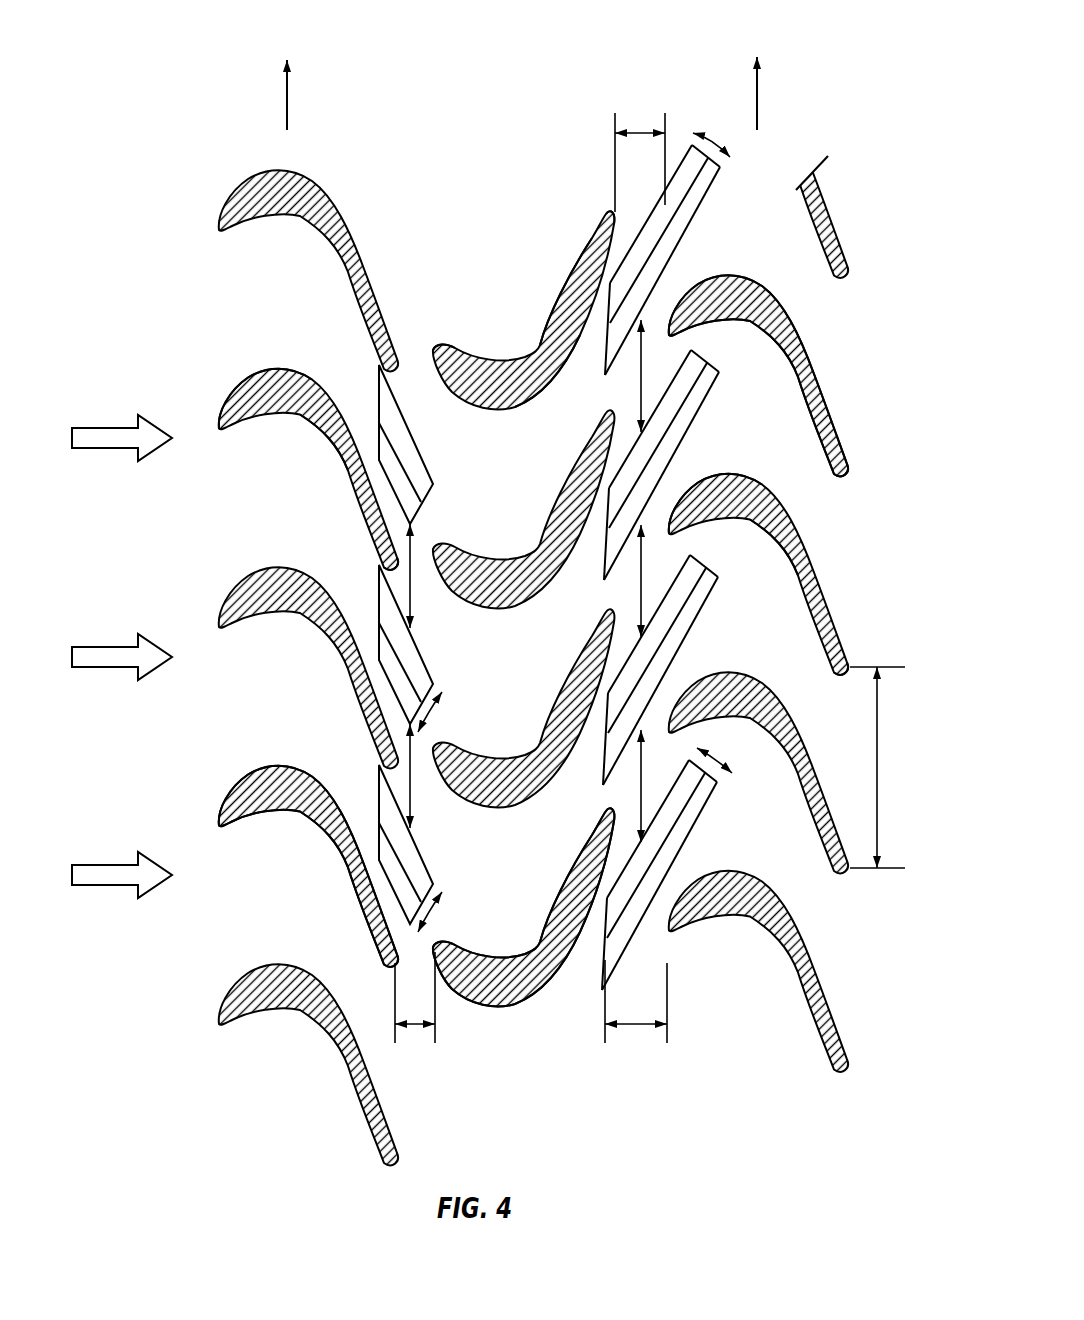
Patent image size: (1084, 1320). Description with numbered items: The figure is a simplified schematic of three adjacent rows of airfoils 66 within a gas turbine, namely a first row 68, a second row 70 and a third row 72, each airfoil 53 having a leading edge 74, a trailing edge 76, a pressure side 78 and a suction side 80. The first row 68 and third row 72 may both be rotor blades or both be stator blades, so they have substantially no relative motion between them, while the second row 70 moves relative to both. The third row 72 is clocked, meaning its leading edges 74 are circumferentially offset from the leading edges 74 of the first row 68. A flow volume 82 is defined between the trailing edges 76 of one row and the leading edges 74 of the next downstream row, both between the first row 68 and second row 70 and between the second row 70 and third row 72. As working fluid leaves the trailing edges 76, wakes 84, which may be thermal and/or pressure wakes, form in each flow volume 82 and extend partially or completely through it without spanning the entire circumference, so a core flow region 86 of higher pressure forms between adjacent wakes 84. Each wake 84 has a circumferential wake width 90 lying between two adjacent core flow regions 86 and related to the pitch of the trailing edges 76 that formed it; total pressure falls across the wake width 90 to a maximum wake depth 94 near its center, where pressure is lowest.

The airfoil 53 is at (820, 372).
The airfoils 66 is at (210, 110).
The first row 68 is at (265, 1050).
The second row 70 is at (512, 1050).
The third row 72 is at (755, 1050).
The leading edge 74 is at (440, 350).
The trailing edge 76 is at (608, 215).
The pressure side 78 is at (523, 358).
The suction side 80 is at (268, 372).
The flow volume 82 is at (637, 133).
The wake 84 is at (695, 205).
The core flow region 86 is at (641, 380).
The wake width 90 is at (728, 142).
The maximum wake depth 94 is at (877, 755).